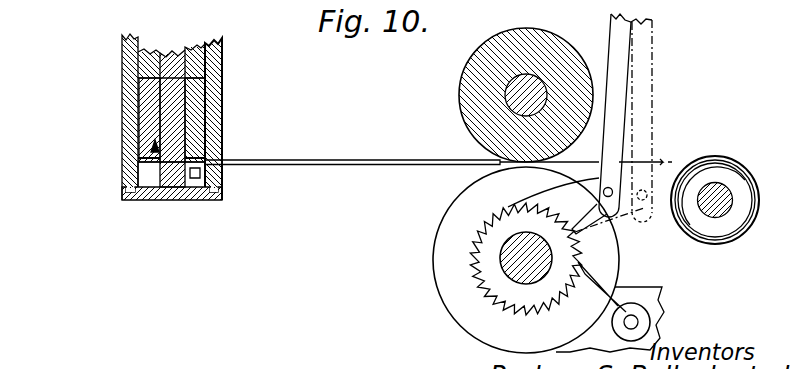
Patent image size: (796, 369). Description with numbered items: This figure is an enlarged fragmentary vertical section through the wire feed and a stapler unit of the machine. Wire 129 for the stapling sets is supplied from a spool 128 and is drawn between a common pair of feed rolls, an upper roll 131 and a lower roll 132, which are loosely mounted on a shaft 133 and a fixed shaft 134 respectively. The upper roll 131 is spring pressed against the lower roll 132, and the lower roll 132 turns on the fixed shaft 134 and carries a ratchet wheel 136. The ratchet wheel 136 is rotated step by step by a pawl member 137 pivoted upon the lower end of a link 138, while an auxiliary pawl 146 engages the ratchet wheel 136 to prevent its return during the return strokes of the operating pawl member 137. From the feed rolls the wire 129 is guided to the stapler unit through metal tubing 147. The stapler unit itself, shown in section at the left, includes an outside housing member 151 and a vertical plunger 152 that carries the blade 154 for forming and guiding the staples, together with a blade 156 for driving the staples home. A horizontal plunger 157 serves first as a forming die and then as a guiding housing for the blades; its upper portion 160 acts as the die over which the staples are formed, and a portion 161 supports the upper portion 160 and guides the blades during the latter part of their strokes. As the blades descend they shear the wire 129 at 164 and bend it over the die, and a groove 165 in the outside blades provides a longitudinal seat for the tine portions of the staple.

The spool 128 is at (706, 242).
The wire 129 is at (681, 162).
The upper roll 131 is at (472, 78).
The lower roll 132 is at (434, 276).
The shaft 133 is at (528, 82).
The fixed shaft 134 is at (510, 257).
The ratchet wheel 136 is at (490, 292).
The pawl member 137 is at (614, 210).
The link 138 is at (640, 72).
The auxiliary pawl 146 is at (618, 281).
The metal tubing 147 is at (372, 144).
The outside housing member 151 is at (137, 50).
The vertical plunger 152 is at (140, 72).
The blade 154 is at (150, 102).
The blade 156 is at (184, 104).
The horizontal plunger 157 is at (195, 201).
The upper portion 160 is at (176, 201).
The portion 161 is at (147, 201).
The shearing point 164 is at (197, 173).
The groove 165 is at (156, 150).